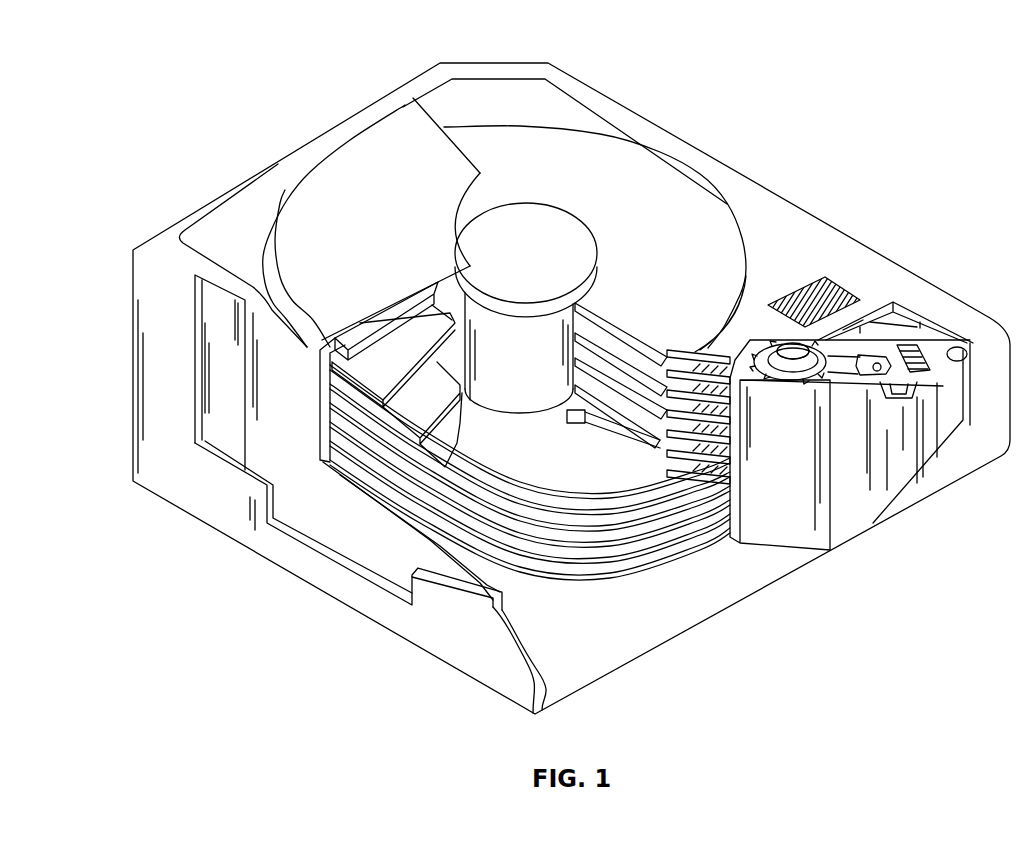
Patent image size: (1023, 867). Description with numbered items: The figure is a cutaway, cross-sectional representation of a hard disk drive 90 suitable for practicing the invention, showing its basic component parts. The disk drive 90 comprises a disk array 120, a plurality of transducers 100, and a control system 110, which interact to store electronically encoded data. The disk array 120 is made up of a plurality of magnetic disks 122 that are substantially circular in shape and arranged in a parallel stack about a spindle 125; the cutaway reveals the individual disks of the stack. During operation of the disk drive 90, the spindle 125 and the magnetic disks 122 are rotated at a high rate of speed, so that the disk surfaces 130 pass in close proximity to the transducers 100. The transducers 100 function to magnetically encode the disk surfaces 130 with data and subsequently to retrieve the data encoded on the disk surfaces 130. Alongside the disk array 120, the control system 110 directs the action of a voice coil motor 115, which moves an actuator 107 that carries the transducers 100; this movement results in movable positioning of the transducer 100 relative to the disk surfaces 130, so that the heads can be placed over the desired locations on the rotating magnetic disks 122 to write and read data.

The disk drive 90 is at (650, 122).
The transducers 100 is at (574, 424).
The actuator 107 is at (810, 347).
The control system 110 is at (835, 297).
The voice coil motor 115 is at (928, 335).
The disk array 120 is at (307, 350).
The magnetic disks 122 is at (626, 526).
The spindle 125 is at (508, 252).
The disk surfaces 130 is at (548, 173).